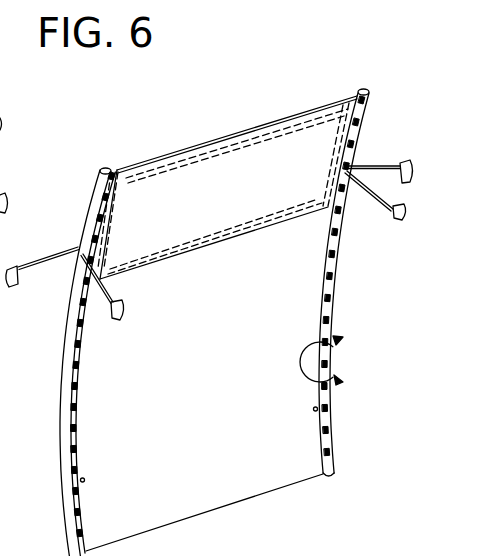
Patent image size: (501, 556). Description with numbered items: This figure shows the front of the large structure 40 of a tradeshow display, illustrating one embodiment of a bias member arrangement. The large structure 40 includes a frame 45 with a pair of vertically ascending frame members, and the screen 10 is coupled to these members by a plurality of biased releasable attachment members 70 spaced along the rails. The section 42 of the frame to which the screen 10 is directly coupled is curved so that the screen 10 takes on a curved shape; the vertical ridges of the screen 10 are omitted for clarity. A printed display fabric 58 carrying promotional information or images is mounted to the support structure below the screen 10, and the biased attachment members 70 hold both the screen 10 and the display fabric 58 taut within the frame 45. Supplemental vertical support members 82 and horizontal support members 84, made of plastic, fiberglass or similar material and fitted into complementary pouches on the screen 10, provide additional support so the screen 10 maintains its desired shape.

The screen 10 is at (232, 204).
The large structure 40 is at (185, 128).
The section 42 is at (349, 206).
The frame 45 is at (80, 197).
The printed display fabric 58 is at (209, 372).
The biased releasable attachment members 70 is at (334, 283).
The supplemental vertical support members 82 is at (90, 243).
The supplemental horizontal support members 84 is at (300, 116).